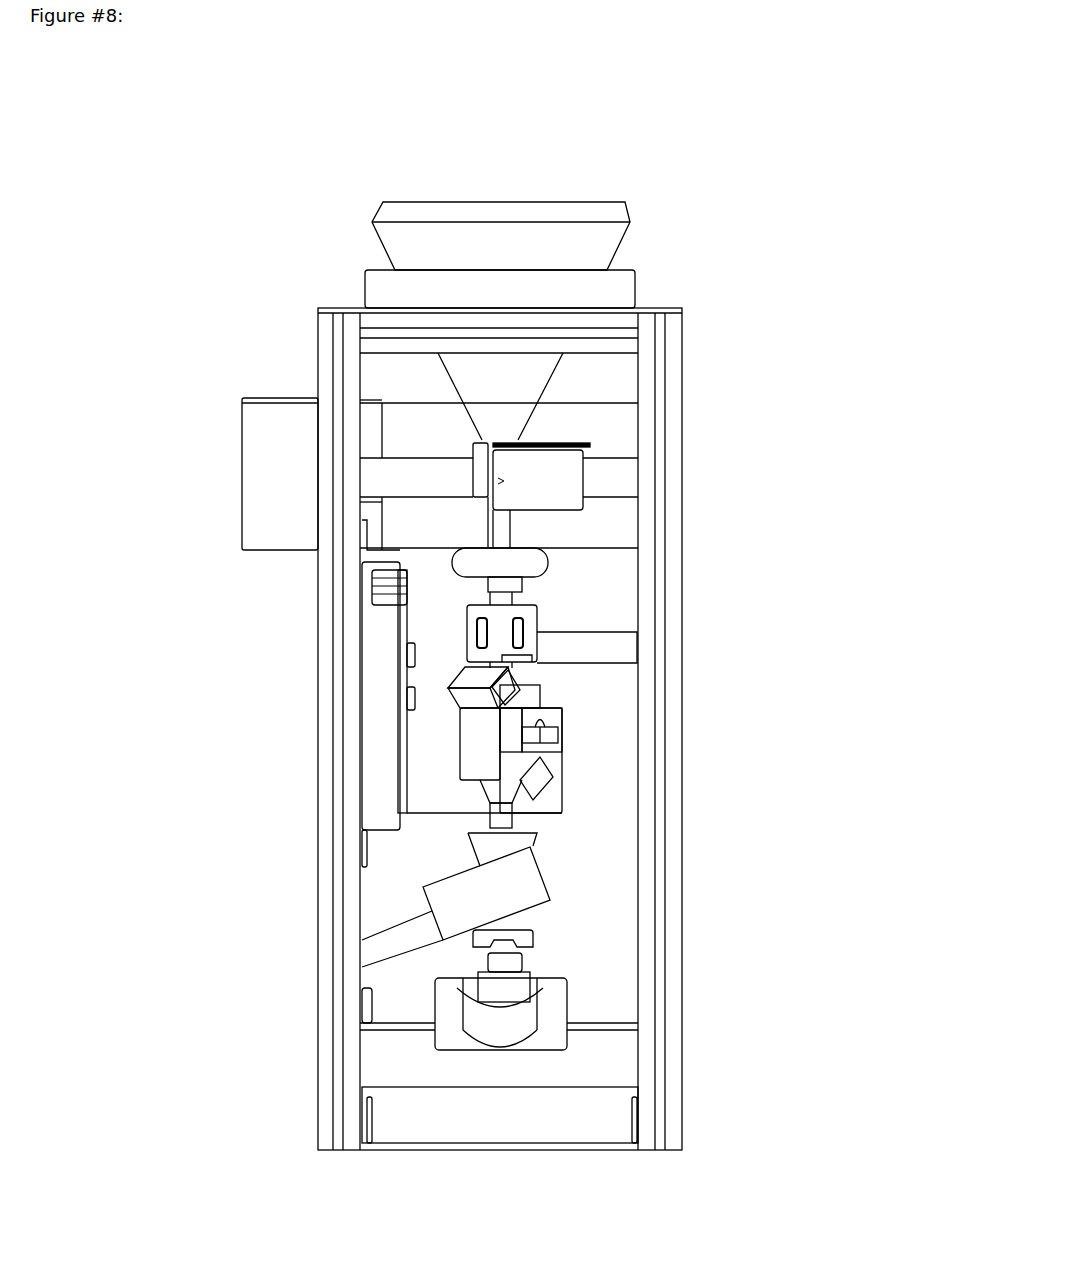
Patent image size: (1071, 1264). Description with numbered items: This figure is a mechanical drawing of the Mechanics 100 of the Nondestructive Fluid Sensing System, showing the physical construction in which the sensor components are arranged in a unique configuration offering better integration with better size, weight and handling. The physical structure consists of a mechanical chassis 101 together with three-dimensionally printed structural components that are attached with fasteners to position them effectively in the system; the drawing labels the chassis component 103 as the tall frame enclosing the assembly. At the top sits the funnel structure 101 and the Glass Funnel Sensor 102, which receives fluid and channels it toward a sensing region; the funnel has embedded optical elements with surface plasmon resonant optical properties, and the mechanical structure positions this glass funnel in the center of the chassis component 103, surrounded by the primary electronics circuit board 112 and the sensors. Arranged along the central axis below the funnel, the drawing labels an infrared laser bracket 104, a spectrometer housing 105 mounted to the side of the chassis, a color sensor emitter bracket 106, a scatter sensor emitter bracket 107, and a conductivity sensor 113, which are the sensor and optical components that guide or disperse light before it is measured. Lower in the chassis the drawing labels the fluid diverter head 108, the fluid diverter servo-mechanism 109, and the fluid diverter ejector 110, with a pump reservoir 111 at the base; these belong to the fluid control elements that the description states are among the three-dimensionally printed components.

The Mechanics 100 is at (497, 631).
The mechanical chassis 101 is at (620, 200).
The Glass Funnel Sensor 102 is at (412, 258).
The chassis component 103 is at (680, 350).
The infrared laser bracket 104 is at (617, 474).
The spectrometer housing 105 is at (240, 508).
The color sensor emitter bracket 106 is at (558, 643).
The scatter sensor emitter bracket 107 is at (480, 742).
The fluid diverter head 108 is at (530, 890).
The fluid diverter servo-mechanism 109 is at (525, 972).
The fluid diverter ejector 110 is at (542, 1038).
The pump reservoir 111 is at (390, 1077).
The primary electronics circuit board 112 is at (378, 760).
The conductivity sensor 113 is at (455, 575).